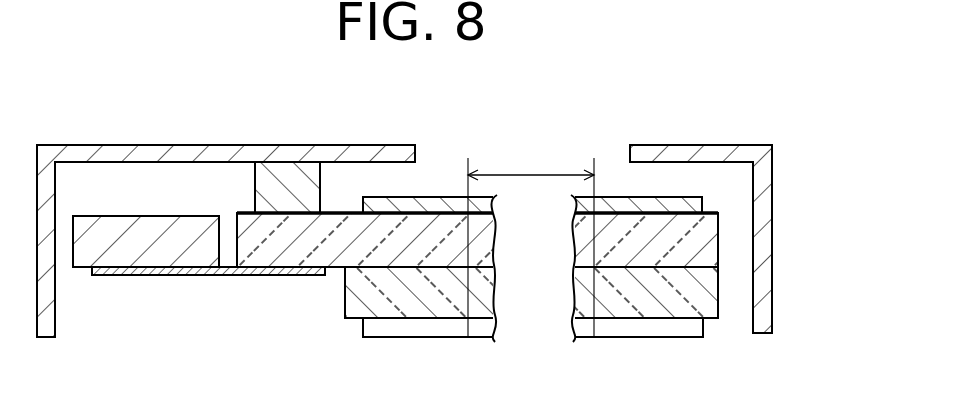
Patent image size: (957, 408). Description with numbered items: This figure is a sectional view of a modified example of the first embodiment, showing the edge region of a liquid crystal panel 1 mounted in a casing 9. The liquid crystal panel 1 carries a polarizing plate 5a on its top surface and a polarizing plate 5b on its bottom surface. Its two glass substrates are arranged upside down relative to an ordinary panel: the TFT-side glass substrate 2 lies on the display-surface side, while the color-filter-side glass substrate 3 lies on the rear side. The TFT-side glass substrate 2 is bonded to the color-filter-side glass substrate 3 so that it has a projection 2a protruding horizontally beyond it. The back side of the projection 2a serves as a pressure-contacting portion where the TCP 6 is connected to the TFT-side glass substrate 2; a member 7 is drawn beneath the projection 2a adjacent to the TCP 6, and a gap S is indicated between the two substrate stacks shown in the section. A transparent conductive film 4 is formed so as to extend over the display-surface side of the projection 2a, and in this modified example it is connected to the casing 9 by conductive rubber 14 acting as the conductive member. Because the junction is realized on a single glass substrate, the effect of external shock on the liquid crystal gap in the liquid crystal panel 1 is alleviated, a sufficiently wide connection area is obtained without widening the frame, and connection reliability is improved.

The liquid crystal panel 1 is at (539, 269).
The TFT-side glass substrate 2 is at (712, 249).
The projection 2a is at (276, 247).
The color-filter-side glass substrate 3 is at (712, 291).
The transparent conductive film 4 is at (718, 212).
The polarizing plate 5a is at (678, 200).
The polarizing plate 5b is at (684, 326).
The TCP 6 is at (203, 273).
The support member 7 is at (86, 248).
The casing 9 is at (652, 152).
The conductive rubber 14 is at (287, 187).
The spacing S is at (531, 243).